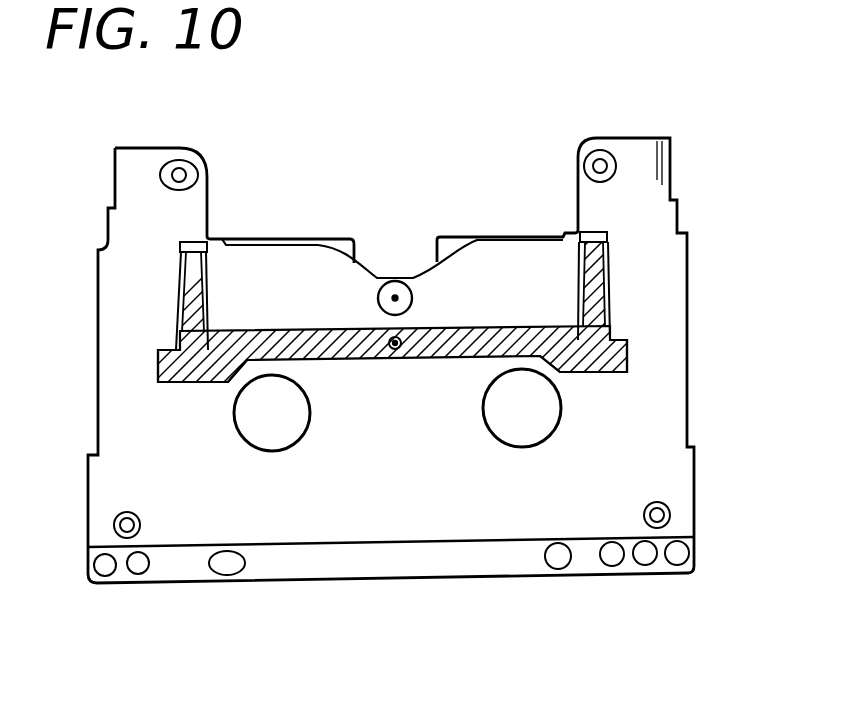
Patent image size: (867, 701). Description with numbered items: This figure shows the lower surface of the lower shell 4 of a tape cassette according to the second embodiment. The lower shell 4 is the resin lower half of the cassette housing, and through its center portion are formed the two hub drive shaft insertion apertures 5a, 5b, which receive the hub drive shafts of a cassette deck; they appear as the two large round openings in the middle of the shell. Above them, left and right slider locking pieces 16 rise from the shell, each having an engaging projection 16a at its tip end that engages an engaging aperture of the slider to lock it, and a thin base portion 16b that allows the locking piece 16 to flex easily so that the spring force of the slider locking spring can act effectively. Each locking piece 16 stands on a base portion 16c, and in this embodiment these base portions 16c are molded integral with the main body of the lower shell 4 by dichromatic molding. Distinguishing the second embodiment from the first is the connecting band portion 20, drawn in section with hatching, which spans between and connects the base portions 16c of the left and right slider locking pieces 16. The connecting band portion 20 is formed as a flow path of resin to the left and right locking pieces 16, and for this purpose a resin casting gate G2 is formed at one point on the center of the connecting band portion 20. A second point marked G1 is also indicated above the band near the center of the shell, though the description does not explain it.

The lower shell 4 is at (430, 520).
The hub drive shaft insertion aperture 5a is at (490, 413).
The hub drive shaft insertion aperture 5b is at (310, 424).
The slider locking piece 16 is at (177, 297).
The engaging projection 16a is at (180, 250).
The base portion 16b is at (173, 337).
The base portion 16c is at (158, 370).
The connecting band portion 20 is at (293, 330).
The center of gravity position G1 is at (395, 298).
The resin casting gate G2 is at (395, 349).